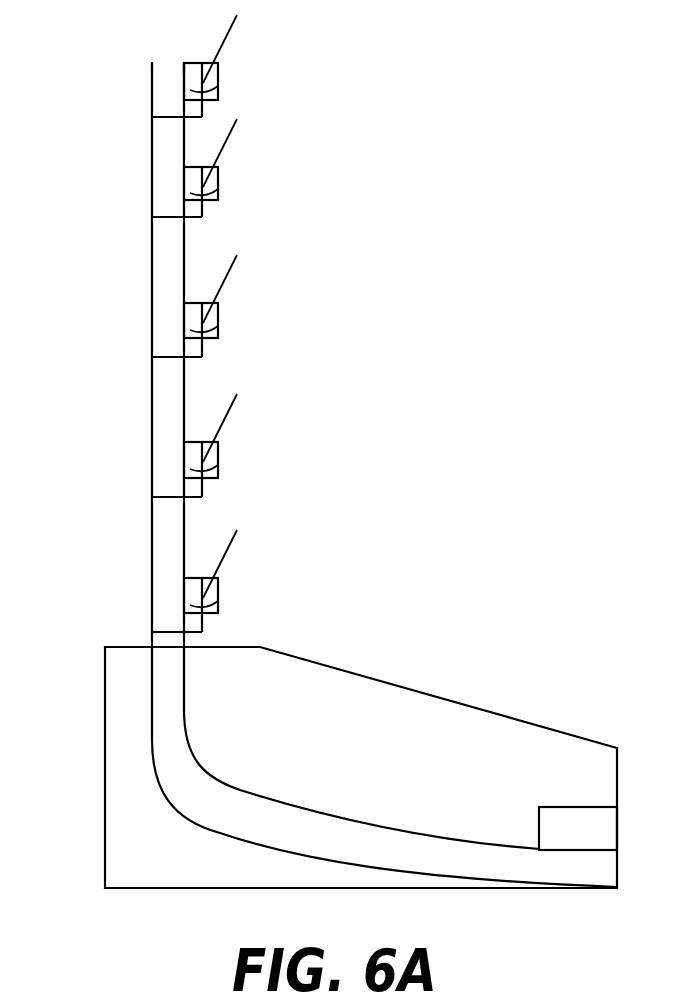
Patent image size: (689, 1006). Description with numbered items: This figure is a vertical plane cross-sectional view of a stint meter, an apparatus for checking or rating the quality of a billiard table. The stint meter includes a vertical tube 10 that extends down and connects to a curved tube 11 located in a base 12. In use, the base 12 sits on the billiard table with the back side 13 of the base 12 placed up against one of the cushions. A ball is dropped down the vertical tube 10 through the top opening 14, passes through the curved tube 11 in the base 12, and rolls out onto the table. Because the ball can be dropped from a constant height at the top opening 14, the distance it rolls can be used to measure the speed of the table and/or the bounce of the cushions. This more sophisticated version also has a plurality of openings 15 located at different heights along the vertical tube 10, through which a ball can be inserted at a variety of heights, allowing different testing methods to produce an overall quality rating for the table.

The vertical tube 10 is at (160, 301).
The curved tube 11 is at (181, 777).
The base 12 is at (123, 869).
The back side 13 is at (105, 673).
The top opening 14 is at (168, 65).
The openings 15 is at (218, 88).